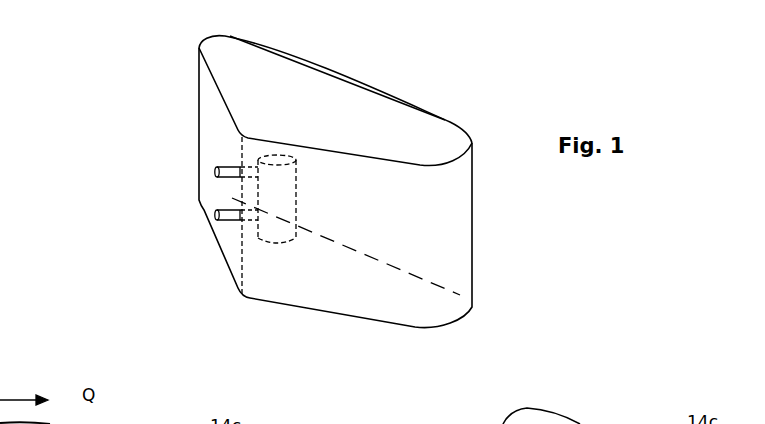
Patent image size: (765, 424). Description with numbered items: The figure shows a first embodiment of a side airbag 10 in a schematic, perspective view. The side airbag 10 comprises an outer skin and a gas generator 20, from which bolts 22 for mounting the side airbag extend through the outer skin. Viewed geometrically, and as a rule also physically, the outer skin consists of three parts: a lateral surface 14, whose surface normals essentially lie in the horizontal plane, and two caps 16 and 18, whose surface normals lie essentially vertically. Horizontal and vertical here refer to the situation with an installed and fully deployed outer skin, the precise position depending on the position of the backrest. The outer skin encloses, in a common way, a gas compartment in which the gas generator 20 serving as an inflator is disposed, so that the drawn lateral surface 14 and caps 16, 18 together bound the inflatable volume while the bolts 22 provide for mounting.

The side airbag 10 is at (159, 108).
The lateral surface 14 is at (462, 245).
The cap 16 is at (375, 107).
The cap 18 is at (433, 332).
The gas generator 20 is at (288, 223).
The bolts 22 is at (230, 175).